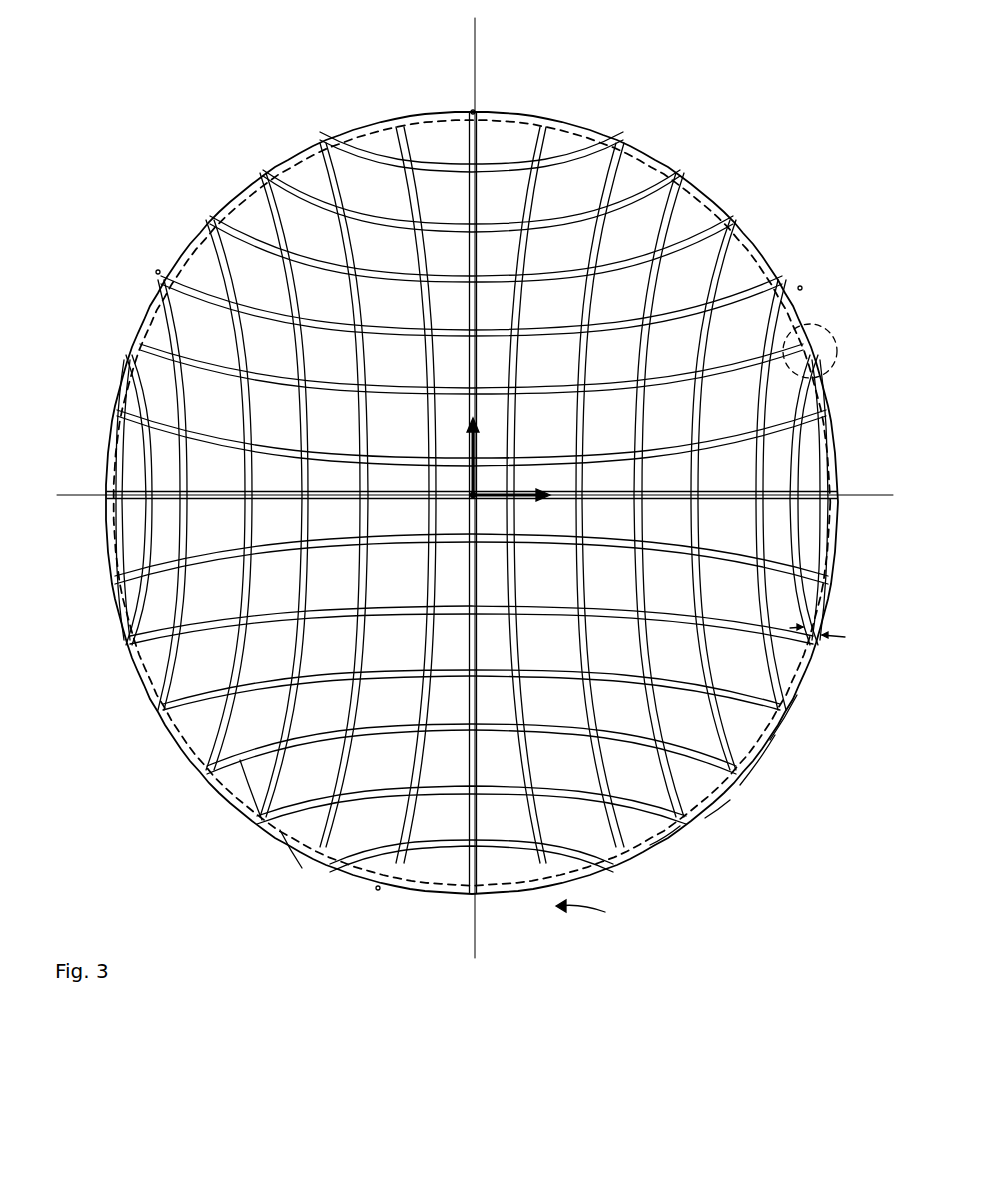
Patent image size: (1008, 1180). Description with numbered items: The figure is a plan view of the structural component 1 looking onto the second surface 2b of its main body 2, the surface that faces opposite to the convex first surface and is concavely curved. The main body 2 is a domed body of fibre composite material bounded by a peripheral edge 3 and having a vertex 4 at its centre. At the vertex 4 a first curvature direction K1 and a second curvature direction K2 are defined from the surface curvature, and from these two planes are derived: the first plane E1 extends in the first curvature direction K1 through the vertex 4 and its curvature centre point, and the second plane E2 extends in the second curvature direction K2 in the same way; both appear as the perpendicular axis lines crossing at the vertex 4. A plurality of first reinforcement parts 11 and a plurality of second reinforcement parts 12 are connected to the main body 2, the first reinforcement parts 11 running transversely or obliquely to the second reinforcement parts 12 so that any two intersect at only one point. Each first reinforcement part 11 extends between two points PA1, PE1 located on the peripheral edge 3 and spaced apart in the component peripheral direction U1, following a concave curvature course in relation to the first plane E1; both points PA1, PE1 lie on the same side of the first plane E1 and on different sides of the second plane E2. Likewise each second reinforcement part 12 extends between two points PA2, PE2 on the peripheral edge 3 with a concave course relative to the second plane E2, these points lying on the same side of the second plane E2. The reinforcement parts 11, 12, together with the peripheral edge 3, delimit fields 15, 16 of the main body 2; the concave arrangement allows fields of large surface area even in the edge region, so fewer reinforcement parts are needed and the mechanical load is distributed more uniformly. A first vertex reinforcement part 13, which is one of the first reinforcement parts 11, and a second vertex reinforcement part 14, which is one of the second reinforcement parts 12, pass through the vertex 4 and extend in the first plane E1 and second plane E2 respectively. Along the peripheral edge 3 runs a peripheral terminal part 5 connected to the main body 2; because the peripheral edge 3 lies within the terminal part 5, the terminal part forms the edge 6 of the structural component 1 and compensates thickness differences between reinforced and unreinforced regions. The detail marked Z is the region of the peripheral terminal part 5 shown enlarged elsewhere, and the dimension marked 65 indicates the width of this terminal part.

The structural component 1 is at (784, 108).
The main body 2 is at (803, 760).
The second surface 2b is at (735, 670).
The peripheral edge 3 is at (753, 757).
The vertex 4 is at (468, 492).
The peripheral terminal part 5 is at (668, 832).
The edge 6 is at (720, 810).
The first reinforcement parts 11 is at (258, 790).
The second reinforcement parts 12 is at (290, 850).
The first vertex reinforcement part 13 is at (460, 870).
The second vertex reinforcement part 14 is at (123, 498).
The fields 15 is at (197, 603).
The fields 16 is at (523, 140).
The wall thickness 65 is at (845, 637).
The first curvature direction K1 is at (480, 438).
The second curvature direction K2 is at (526, 500).
The first plane E1 is at (483, 53).
The second plane E2 is at (884, 512).
The region Z is at (836, 341).
The component peripheral direction U1 is at (594, 918).
The point of first pair of points PE1 is at (393, 118).
The point of second pair of points PE2 is at (802, 286).
The point of first pair of points PA1 is at (378, 890).
The point of second pair of points PA2 is at (157, 270).